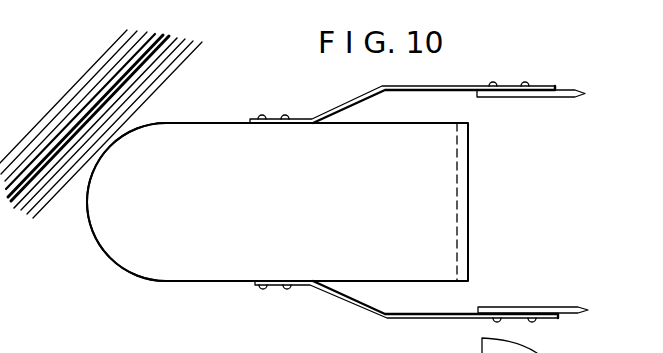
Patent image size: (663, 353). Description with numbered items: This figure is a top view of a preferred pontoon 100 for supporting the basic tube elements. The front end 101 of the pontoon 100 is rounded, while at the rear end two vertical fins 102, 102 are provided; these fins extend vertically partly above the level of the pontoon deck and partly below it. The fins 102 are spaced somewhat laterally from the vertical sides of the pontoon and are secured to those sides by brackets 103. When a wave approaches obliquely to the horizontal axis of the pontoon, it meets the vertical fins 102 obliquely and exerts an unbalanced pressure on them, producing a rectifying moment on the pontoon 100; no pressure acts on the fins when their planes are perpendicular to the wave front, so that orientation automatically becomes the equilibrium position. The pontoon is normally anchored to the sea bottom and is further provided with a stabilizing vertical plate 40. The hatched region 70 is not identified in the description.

The mounting surface 70 is at (150, 60).
The pontoon 100 is at (295, 197).
The front end 101 is at (100, 247).
The vertical fins 102 is at (523, 97).
The brackets 103 is at (445, 320).
The stabilizing vertical plate 40 is at (457, 236).